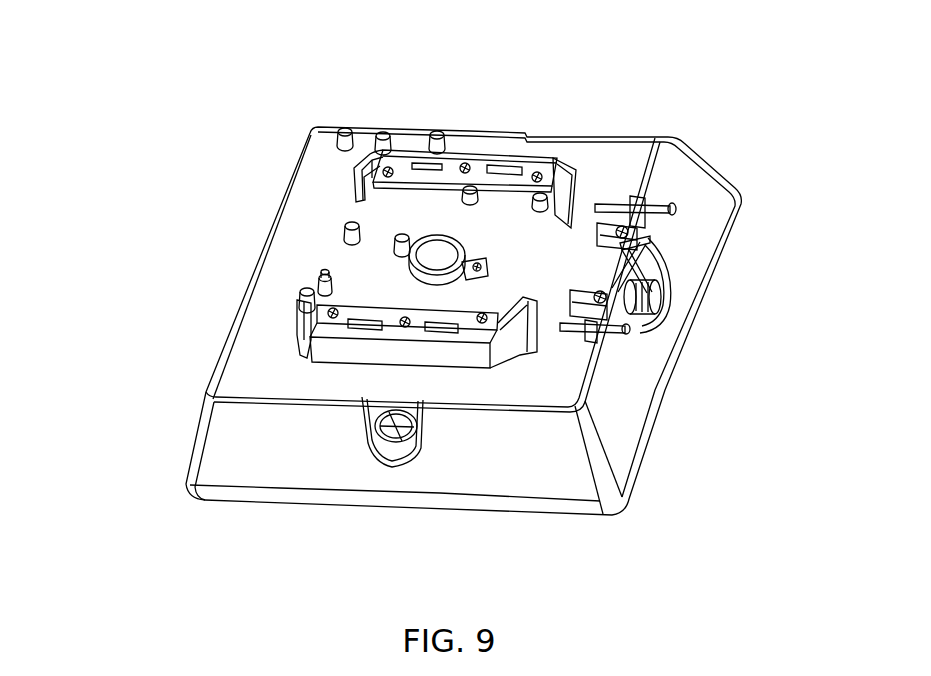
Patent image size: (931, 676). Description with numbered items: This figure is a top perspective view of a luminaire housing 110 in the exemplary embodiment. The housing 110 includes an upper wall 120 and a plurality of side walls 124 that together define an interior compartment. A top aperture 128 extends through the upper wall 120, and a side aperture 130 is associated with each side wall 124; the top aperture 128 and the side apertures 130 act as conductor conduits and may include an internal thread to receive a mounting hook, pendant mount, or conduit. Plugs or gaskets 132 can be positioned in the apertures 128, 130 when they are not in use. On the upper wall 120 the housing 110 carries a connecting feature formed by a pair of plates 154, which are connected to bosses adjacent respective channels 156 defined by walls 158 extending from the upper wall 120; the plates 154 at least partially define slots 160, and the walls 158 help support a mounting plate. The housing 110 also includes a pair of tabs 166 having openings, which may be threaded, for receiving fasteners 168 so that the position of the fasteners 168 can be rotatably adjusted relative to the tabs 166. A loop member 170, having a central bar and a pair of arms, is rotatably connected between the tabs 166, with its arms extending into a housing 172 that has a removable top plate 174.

The housing 110 is at (178, 447).
The upper wall 120 is at (313, 180).
The side walls 124 is at (247, 465).
The top aperture 128 is at (466, 247).
The side aperture 130 is at (380, 440).
The plug or gasket 132 is at (412, 436).
The plates 154 is at (428, 176).
The channels 156 is at (313, 332).
The walls 158 is at (297, 320).
The slots 160 is at (500, 167).
The tabs 166 is at (637, 203).
The fasteners 168 is at (670, 204).
The loop member 170 is at (648, 248).
The housing 172 is at (608, 302).
The removable top plate 174 is at (590, 305).